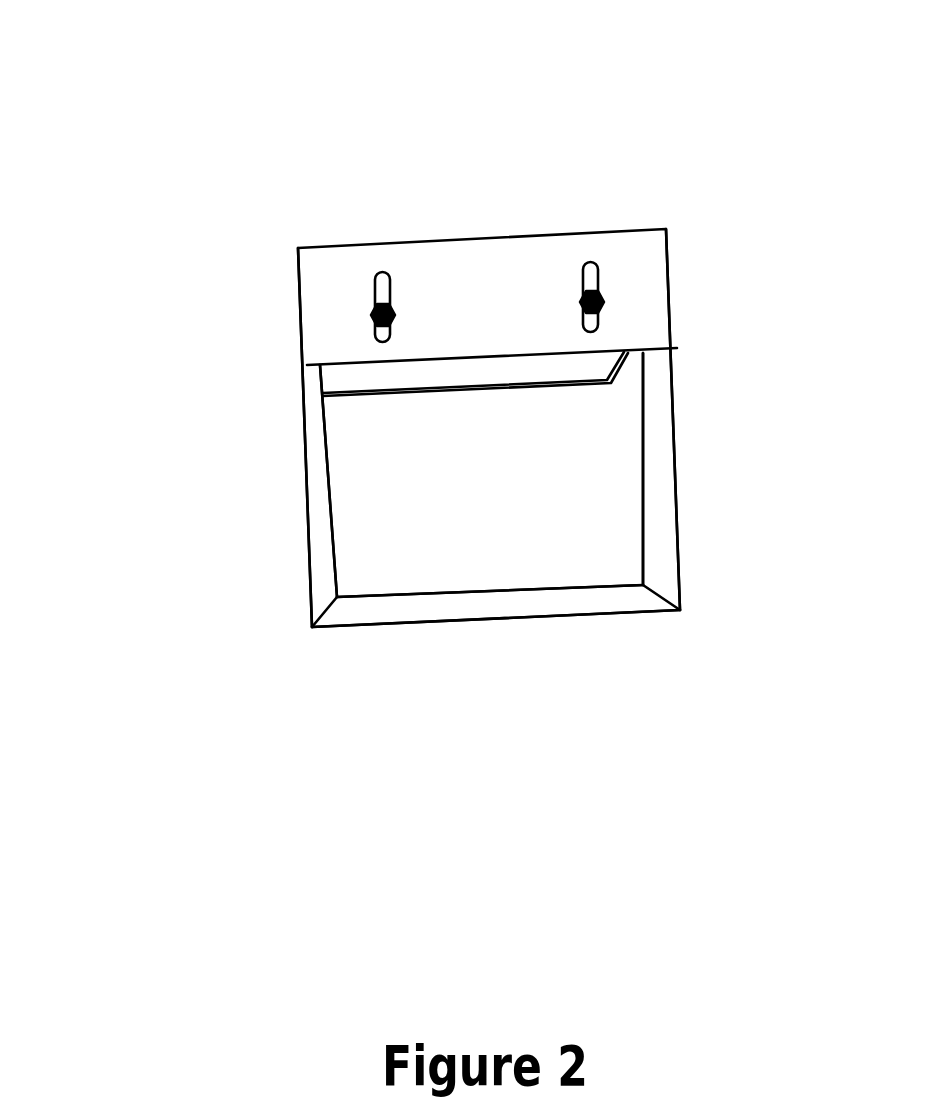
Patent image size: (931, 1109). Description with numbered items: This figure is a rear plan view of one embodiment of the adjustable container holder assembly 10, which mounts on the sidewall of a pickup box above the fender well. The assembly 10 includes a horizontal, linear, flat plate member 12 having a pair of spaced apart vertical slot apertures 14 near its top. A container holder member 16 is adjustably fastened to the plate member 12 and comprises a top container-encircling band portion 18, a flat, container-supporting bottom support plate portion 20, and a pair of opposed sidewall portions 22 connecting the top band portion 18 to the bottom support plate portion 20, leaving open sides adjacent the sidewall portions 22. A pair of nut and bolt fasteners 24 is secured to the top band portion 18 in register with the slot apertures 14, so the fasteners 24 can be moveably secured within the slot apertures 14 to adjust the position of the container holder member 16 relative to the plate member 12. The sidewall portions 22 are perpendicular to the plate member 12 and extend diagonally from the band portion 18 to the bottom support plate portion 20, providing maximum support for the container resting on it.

The adjustable container holder assembly 10 is at (214, 105).
The flat plate member 12 is at (480, 282).
The vertical slot apertures 14 is at (382, 270).
The container holder member 16 is at (168, 494).
The top container-encircling band portion 18 is at (468, 372).
The bottom support plate portion 20 is at (480, 607).
The opposed sidewall portions 22 is at (332, 530).
The nut and bolt fasteners 24 is at (372, 315).